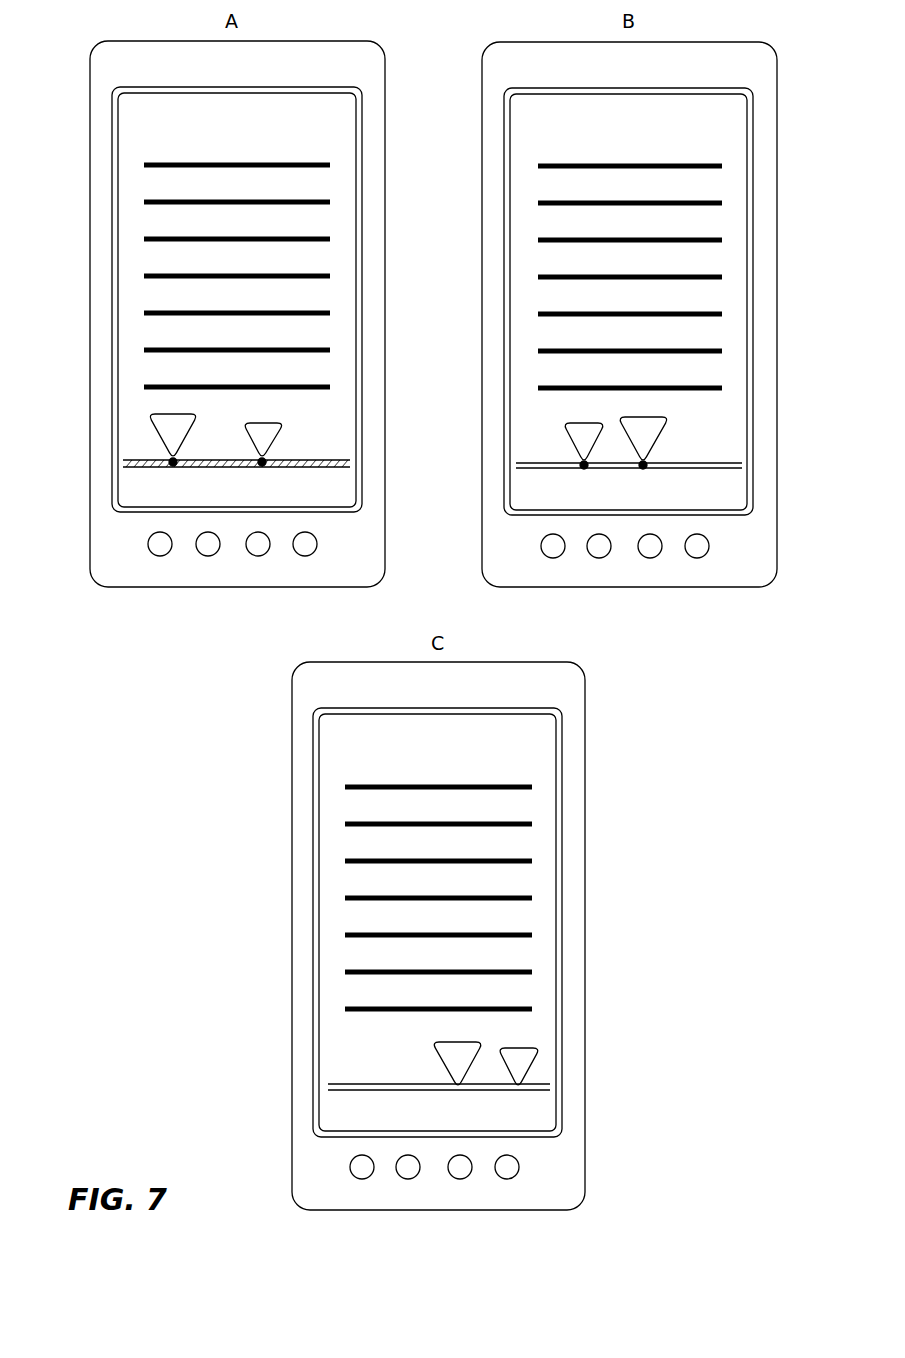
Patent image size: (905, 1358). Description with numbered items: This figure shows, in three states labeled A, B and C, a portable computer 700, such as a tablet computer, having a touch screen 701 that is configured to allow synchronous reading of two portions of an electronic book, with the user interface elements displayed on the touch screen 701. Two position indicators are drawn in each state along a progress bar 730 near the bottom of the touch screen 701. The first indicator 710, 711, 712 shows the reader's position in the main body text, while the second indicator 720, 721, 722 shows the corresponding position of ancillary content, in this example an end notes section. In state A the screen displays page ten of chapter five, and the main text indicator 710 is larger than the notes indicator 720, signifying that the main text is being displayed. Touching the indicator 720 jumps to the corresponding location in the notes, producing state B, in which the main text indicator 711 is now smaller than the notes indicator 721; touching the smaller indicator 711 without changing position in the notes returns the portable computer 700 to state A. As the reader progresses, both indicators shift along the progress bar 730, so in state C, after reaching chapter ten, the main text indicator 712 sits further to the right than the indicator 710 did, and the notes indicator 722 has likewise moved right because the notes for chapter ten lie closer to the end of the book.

The portable computer 700 is at (75, 69).
The touch screen 701 is at (328, 124).
The first indicator 710 is at (152, 437).
The main text indicator 711 is at (567, 440).
The main text indicator 712 is at (442, 1070).
The second indicator 720 is at (280, 451).
The notes indicator 721 is at (667, 450).
The notes indicator 722 is at (535, 1073).
The progress bar 730 is at (325, 467).